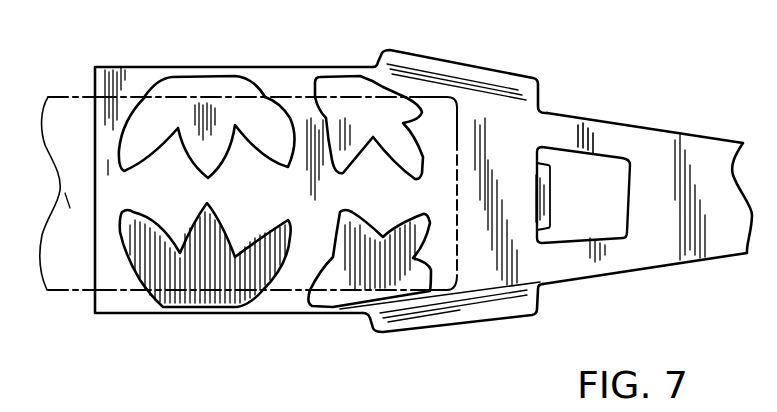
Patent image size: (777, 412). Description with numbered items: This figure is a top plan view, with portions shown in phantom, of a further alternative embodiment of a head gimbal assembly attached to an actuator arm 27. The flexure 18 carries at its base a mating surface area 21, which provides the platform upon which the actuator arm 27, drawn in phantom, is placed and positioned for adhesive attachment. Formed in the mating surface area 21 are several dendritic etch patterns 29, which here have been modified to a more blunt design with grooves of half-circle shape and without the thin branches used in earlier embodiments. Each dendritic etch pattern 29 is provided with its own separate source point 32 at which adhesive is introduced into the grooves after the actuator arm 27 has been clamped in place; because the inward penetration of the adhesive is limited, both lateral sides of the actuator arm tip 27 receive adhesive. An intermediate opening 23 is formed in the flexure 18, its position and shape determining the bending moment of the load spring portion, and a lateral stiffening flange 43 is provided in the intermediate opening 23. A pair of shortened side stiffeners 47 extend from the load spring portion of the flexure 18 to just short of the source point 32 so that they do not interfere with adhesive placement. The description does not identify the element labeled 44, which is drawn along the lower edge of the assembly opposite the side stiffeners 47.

The strain relief body 18 is at (640, 262).
The housing 21 is at (133, 300).
The latch arm 23 is at (604, 156).
The cable 27 is at (55, 178).
The body 29 is at (343, 230).
The cutting blades 32 is at (320, 83).
The latch 43 is at (550, 195).
The lower flange 44 is at (493, 312).
The upper flange 47 is at (482, 77).